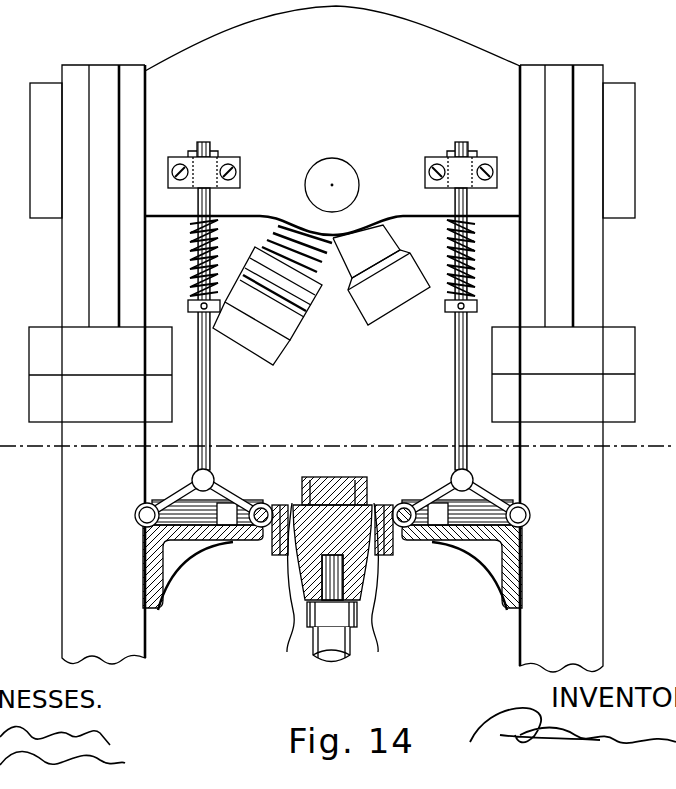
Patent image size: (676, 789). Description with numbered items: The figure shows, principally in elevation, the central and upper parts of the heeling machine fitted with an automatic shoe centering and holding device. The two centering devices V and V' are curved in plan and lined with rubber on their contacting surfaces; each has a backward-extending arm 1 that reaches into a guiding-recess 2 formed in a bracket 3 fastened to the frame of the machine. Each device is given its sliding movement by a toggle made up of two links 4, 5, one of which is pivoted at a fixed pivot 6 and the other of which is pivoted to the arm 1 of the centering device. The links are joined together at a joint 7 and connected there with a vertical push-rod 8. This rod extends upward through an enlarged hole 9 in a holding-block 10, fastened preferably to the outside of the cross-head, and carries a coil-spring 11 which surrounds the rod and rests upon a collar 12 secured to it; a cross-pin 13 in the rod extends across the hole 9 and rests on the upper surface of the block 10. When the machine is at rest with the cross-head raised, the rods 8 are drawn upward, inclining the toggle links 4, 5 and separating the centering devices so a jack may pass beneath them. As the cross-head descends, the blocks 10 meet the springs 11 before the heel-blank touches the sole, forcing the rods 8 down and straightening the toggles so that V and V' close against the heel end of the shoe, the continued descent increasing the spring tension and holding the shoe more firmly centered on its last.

The backward-extending arm 1 is at (388, 488).
The guiding-recess 2 is at (192, 526).
The bracket 3 is at (163, 573).
The toggle link 4 is at (168, 495).
The toggle link 5 is at (231, 495).
The pivot 6 is at (136, 515).
The toggle joint 7 is at (211, 476).
The push-rod 8 is at (211, 421).
The enlarged hole 9 is at (218, 160).
The holding-block 10 is at (240, 157).
The coil-spring 11 is at (195, 245).
The collar 12 is at (188, 306).
The cross-pin 13 is at (198, 150).